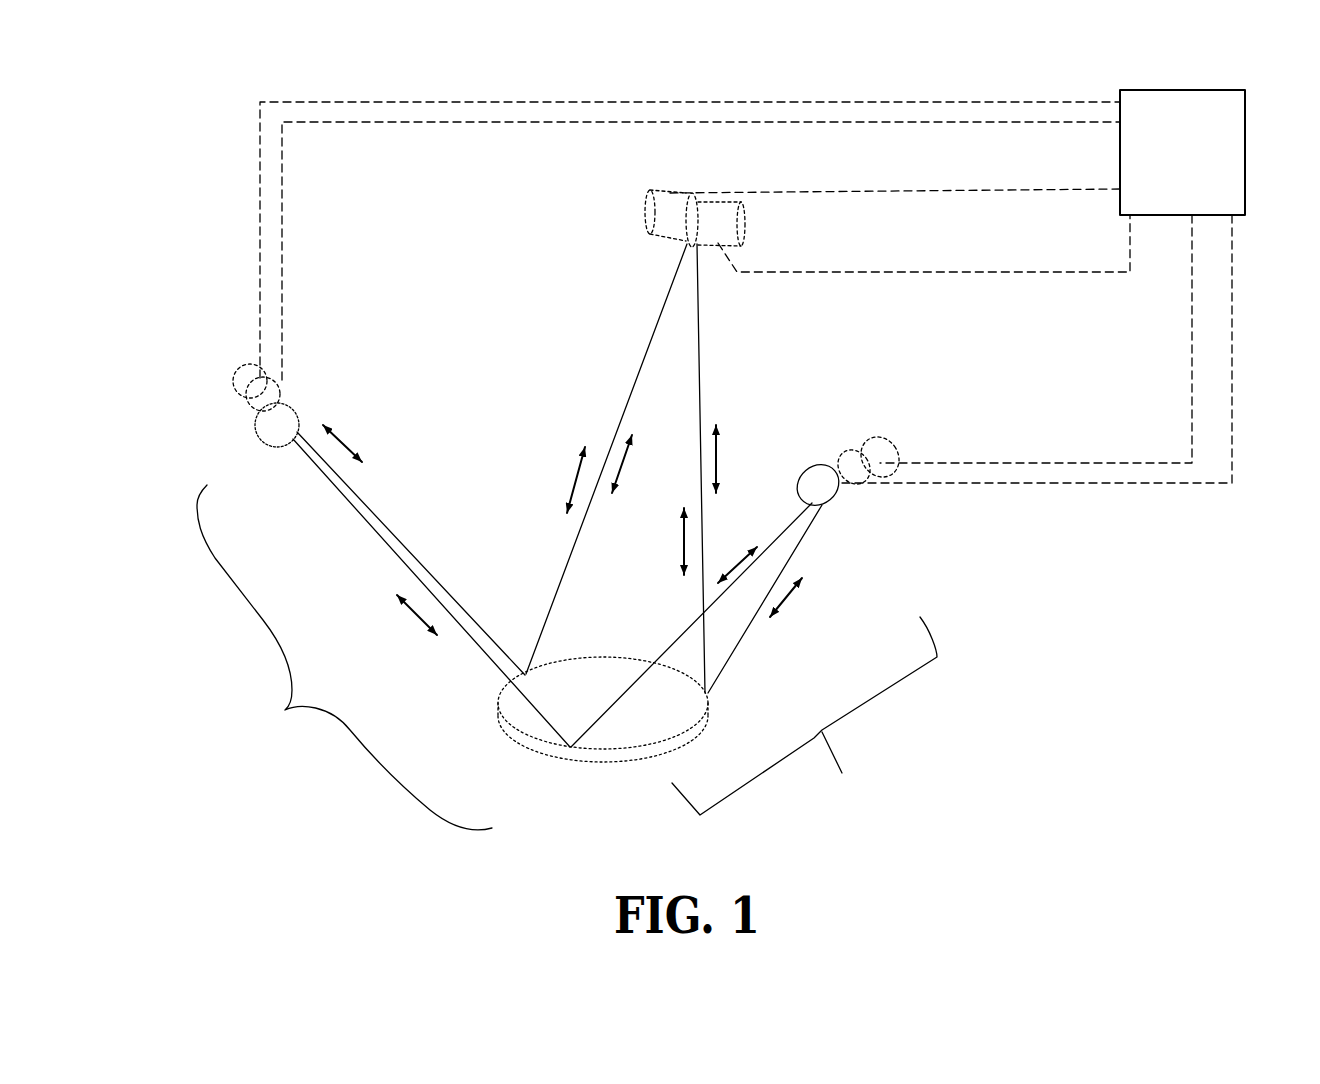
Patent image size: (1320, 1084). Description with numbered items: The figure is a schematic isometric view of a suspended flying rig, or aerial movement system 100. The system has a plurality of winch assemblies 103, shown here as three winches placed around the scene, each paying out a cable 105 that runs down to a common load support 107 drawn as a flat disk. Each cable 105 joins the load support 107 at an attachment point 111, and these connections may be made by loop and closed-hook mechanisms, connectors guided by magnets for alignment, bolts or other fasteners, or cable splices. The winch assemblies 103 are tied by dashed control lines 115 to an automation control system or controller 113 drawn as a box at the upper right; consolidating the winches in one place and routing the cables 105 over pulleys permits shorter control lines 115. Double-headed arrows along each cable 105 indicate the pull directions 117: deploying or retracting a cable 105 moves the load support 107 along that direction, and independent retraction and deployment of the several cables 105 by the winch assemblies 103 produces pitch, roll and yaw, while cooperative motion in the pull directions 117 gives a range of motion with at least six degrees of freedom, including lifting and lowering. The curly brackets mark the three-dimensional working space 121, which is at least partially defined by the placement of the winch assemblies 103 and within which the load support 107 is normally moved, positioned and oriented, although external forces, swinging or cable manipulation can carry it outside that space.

The aerial movement system 100 is at (232, 108).
The winch assembly 103 is at (252, 366).
The cable 105 is at (648, 338).
The load support 107 is at (653, 721).
The attachment point 111 is at (522, 673).
The controller 113 is at (1204, 166).
The control line 115 is at (672, 98).
The pull direction 117 is at (352, 442).
The working space 121 is at (567, 657).